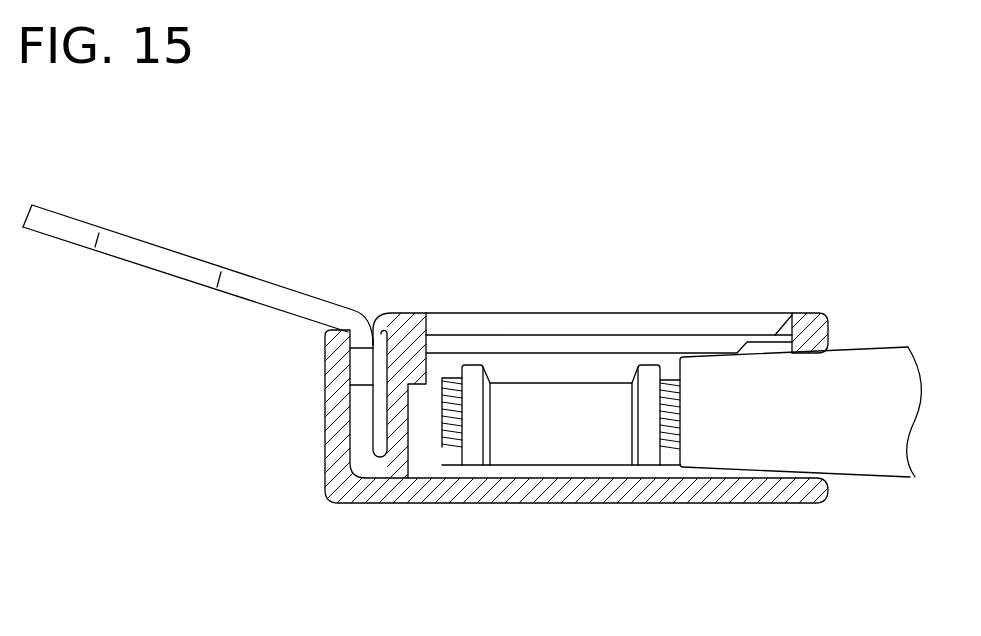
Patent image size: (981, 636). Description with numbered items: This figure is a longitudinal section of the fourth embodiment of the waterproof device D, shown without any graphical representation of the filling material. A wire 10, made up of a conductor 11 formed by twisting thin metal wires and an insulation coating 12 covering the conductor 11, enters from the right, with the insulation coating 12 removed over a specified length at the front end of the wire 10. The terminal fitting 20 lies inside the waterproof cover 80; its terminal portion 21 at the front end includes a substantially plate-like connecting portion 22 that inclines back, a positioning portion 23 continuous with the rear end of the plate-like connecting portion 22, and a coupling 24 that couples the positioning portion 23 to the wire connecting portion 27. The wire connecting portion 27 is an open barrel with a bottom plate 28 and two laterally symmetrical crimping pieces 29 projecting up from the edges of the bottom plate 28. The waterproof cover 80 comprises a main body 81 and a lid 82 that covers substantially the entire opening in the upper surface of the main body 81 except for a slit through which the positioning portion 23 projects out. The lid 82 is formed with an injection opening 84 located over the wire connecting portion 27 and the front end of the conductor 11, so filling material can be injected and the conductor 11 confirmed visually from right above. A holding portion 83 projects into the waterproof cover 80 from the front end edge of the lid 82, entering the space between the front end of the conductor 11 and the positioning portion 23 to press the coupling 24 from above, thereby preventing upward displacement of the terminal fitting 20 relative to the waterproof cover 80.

The waterproof device D is at (770, 185).
The wire 10 is at (891, 488).
The conductor 11 is at (452, 315).
The insulation coating 12 is at (857, 453).
The terminal fitting 20 is at (357, 222).
The terminal portion 21 is at (232, 392).
The plate-like connecting portion 22 is at (270, 305).
The positioning portion 23 is at (353, 423).
The coupling 24 is at (387, 473).
The wire connecting portion 27 is at (527, 560).
The bottom plate 28 is at (550, 465).
The crimping pieces 29 is at (610, 422).
The waterproof cover 80 is at (847, 265).
The main body 81 is at (735, 497).
The lid 82 is at (792, 312).
The holding portion 83 is at (396, 426).
The injection opening 84 is at (778, 323).